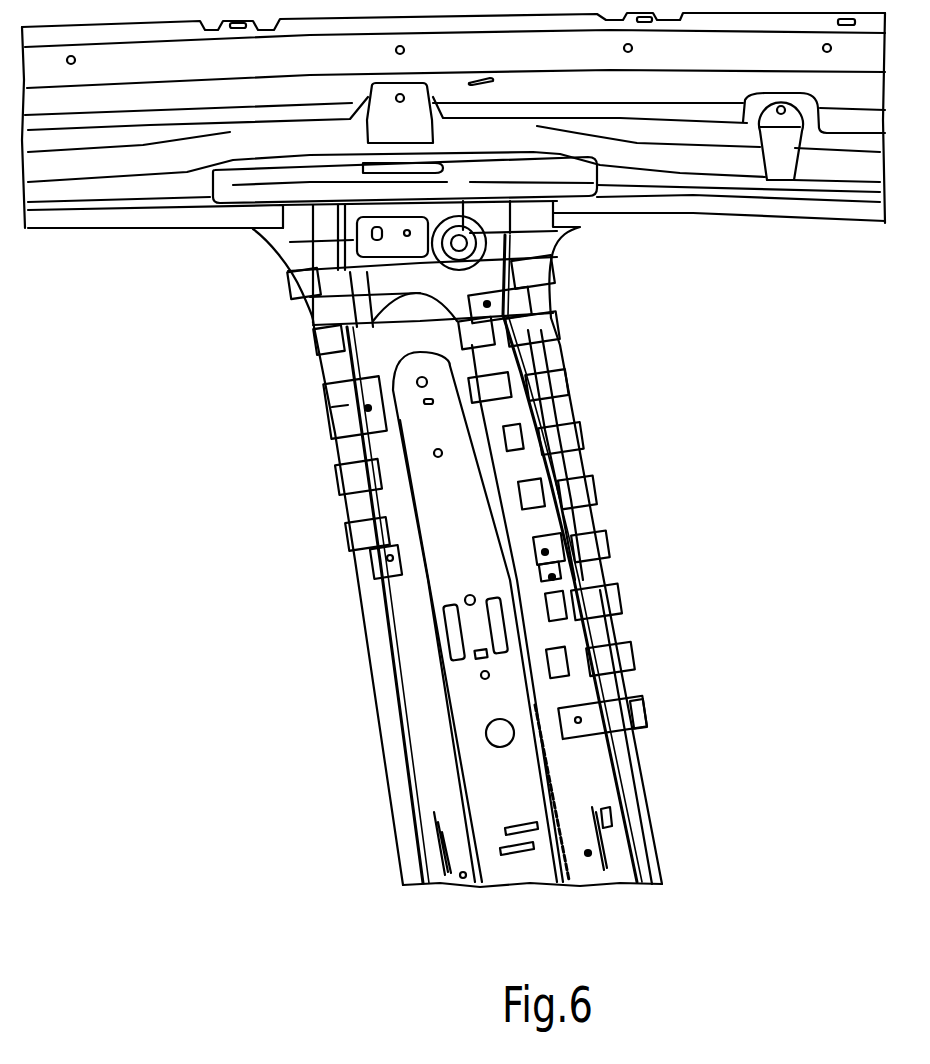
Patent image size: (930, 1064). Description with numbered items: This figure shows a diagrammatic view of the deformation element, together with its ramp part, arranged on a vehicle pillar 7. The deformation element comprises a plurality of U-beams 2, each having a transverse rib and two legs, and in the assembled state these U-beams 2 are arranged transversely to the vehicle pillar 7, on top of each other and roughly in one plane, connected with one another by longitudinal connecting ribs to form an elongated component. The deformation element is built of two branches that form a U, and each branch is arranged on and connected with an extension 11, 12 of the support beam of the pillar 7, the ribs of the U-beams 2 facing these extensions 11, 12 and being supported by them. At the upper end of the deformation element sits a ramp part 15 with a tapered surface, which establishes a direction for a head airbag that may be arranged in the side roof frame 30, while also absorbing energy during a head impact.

The U-beam 2 is at (647, 715).
The vehicle pillar 7 is at (380, 810).
The extension of the support beam 11 is at (380, 685).
The extension of the support beam 12 is at (640, 833).
The ramp part 15 is at (280, 175).
The side roof frame 30 is at (688, 185).